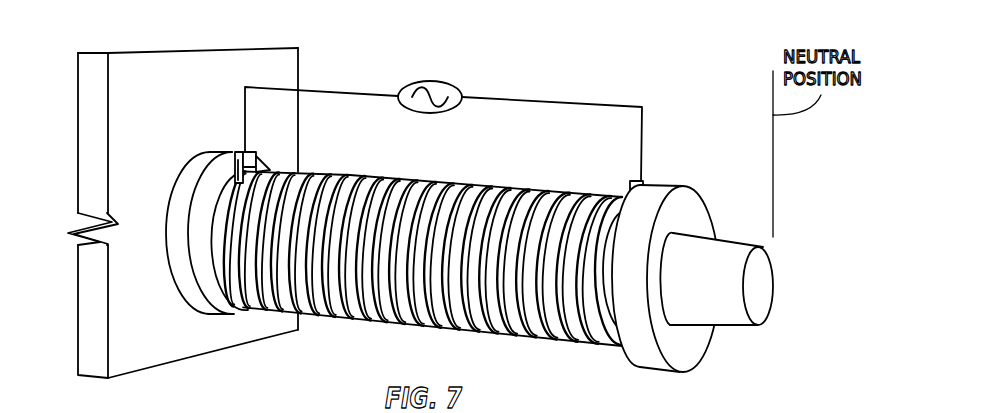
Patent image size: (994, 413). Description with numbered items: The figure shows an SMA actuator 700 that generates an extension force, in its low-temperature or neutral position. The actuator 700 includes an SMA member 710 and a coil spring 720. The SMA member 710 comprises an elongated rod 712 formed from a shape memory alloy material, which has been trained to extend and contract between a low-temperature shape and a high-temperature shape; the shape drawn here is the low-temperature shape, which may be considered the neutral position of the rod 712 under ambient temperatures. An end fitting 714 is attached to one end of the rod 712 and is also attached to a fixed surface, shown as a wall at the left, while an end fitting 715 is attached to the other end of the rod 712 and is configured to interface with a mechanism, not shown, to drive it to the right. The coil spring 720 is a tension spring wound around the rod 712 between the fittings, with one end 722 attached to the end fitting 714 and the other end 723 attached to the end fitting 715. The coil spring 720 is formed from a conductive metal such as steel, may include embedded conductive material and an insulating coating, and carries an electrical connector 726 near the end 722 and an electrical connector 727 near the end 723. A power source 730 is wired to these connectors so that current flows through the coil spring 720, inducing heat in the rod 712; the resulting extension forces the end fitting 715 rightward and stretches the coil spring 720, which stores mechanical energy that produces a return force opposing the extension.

The SMA actuator 700 is at (454, 201).
The SMA member 710 is at (726, 286).
The elongated rod 712 is at (210, 258).
The end fitting 714 is at (176, 258).
The end fitting 715 is at (673, 286).
The coil spring 720 is at (452, 190).
The end of coil spring 722 is at (262, 152).
The end of coil spring 723 is at (628, 179).
The electrical connector 726 is at (237, 151).
The electrical connector 727 is at (642, 181).
The power source 730 is at (432, 80).